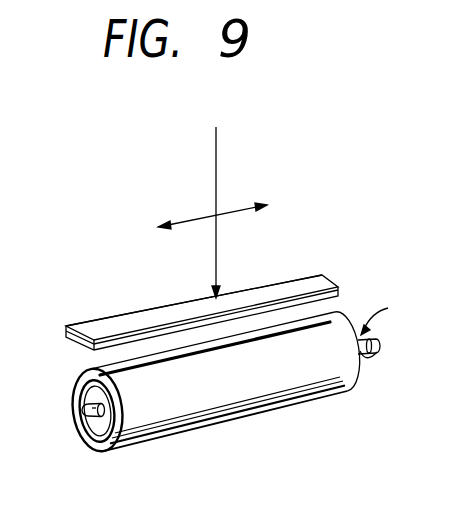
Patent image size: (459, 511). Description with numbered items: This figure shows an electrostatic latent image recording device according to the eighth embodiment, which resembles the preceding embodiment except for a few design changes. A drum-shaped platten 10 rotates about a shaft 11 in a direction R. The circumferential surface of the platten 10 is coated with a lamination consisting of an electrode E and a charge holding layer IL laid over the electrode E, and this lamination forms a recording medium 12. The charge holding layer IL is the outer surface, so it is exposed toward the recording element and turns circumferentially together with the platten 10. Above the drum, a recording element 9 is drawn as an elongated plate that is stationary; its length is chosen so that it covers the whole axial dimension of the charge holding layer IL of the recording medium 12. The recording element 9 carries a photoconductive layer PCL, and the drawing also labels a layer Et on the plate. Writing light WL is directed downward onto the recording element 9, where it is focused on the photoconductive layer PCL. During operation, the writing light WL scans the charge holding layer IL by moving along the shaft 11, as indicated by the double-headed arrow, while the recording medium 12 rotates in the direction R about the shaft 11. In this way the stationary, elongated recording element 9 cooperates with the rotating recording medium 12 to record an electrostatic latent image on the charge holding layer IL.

The recording element 9 is at (313, 283).
The transparent electrode Et is at (294, 280).
The writing light WL is at (212, 197).
The platten 10 is at (97, 422).
The photoconductive layer PCL is at (333, 301).
The recording medium 12 is at (127, 437).
The charge holding layer IL is at (297, 391).
The electrode E is at (105, 438).
The shaft 11 is at (87, 402).
The direction of rotation R is at (383, 328).